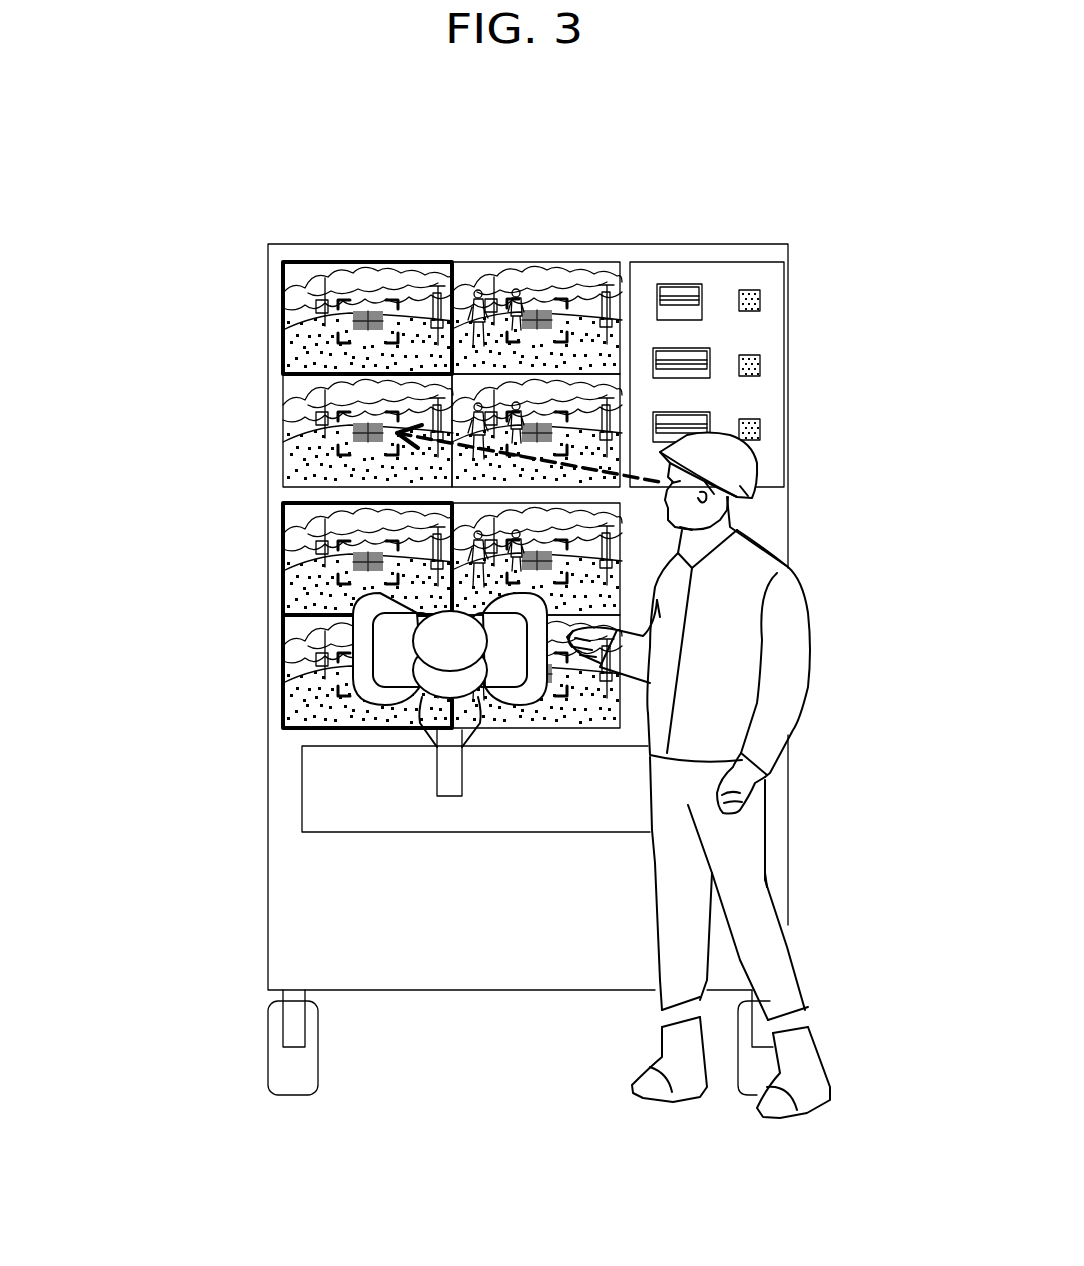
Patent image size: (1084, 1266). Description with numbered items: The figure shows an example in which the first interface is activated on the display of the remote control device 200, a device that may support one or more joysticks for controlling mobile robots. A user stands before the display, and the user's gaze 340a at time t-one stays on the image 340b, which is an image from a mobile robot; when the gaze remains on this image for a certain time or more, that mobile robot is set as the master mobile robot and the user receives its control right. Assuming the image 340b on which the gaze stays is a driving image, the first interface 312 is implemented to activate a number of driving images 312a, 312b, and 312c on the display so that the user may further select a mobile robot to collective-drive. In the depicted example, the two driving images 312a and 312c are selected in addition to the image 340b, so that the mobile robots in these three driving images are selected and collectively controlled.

The remote control device 200 is at (805, 218).
The first interface 312 is at (283, 708).
The driving image 312a is at (300, 346).
The driving image 312b is at (300, 553).
The driving image 312c is at (300, 643).
The user's gaze 340a is at (573, 467).
The image 340b is at (300, 433).